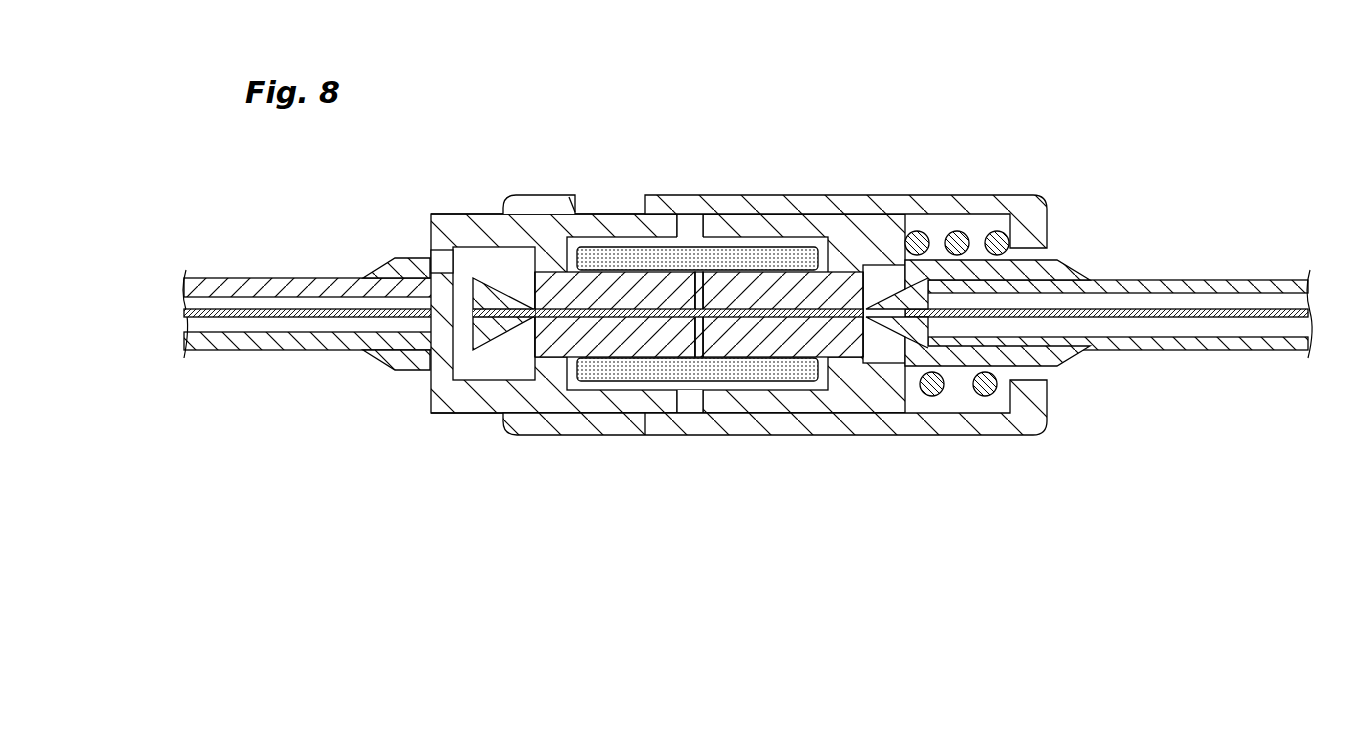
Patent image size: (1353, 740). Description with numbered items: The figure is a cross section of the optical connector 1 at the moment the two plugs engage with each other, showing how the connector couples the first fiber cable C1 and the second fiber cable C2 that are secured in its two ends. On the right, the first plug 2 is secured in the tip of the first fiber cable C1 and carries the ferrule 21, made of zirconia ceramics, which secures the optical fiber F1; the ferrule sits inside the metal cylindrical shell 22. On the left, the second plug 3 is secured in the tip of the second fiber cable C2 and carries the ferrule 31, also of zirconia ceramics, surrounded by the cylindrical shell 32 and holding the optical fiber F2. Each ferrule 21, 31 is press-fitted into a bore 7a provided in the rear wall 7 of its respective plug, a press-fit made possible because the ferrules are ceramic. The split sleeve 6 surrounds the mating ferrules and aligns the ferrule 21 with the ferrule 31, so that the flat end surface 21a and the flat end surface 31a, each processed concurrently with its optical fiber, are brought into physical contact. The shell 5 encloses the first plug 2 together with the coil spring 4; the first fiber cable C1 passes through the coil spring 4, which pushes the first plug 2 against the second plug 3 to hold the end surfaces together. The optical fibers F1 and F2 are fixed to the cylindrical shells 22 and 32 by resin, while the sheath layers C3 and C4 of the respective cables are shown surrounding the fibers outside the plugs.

The optical connector 1 is at (726, 275).
The first plug 2 is at (804, 266).
The second plug 3 is at (554, 273).
The coil spring 4 is at (930, 397).
The shell 5 is at (883, 207).
The split sleeve 6 is at (590, 367).
The rear wall 7 is at (552, 365).
The bore 7a is at (532, 343).
The ferrule 21 is at (790, 340).
The end surface 21a is at (695, 330).
The cylindrical shell 22 is at (750, 223).
The ferrule 31 is at (638, 343).
The end surface 31a is at (725, 335).
The cylindrical shell 32 is at (618, 227).
The first fiber cable C1 is at (1120, 276).
The second fiber cable C2 is at (328, 277).
The first cable sheath C3 is at (1150, 278).
The second cable sheath C4 is at (297, 288).
The optical fiber F1 is at (1197, 316).
The optical fiber F2 is at (242, 318).